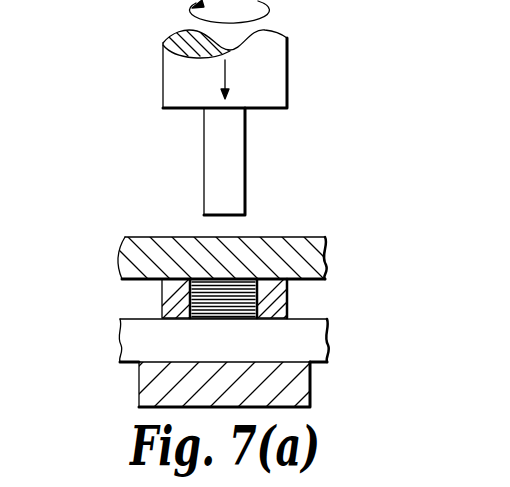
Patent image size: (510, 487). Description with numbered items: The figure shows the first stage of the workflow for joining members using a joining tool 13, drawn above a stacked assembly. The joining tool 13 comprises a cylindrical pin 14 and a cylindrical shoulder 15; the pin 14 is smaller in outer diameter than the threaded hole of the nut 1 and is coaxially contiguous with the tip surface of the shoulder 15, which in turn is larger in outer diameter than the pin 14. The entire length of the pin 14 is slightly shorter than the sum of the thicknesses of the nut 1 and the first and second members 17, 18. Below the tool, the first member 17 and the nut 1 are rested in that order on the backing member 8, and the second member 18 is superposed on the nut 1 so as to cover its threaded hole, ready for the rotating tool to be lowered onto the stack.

The nut 1 is at (290, 295).
The backing member 8 is at (312, 387).
The joining tool 13 is at (217, 54).
The cylindrical pin 14 is at (246, 162).
The cylindrical shoulder 15 is at (278, 60).
The first member 17 is at (118, 342).
The second member 18 is at (327, 255).